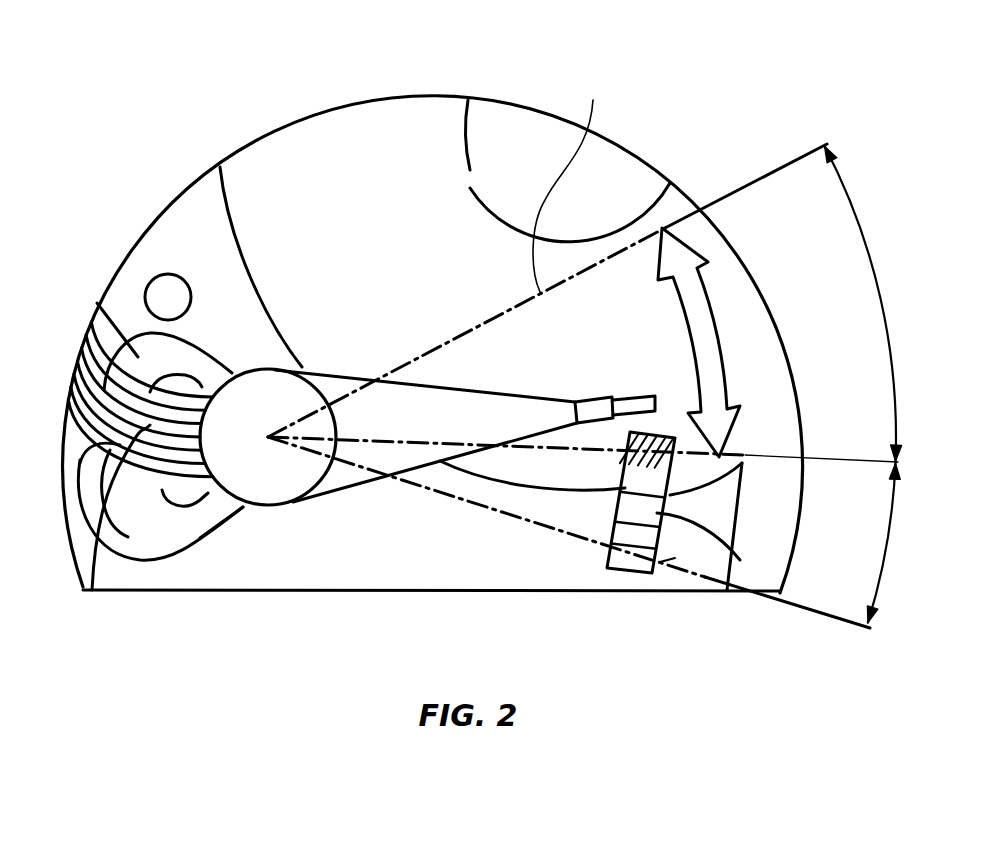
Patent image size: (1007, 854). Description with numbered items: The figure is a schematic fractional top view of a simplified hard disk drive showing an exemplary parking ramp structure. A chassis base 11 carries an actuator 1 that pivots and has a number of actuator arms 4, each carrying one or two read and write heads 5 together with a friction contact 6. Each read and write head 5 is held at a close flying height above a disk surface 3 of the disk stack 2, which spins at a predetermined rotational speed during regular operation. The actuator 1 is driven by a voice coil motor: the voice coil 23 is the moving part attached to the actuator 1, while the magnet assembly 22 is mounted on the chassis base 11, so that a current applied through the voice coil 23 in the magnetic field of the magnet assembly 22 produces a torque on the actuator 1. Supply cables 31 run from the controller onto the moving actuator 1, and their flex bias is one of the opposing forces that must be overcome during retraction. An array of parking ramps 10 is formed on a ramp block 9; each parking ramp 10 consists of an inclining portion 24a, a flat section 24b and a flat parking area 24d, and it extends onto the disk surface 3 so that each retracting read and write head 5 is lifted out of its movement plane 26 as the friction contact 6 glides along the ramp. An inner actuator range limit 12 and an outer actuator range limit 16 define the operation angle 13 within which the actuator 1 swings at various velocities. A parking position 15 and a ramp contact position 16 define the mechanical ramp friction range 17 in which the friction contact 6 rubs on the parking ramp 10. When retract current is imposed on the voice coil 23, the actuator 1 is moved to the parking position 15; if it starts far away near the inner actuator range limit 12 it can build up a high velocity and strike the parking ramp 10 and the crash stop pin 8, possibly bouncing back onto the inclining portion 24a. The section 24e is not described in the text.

The actuator 1 is at (248, 368).
The disk stack 2 is at (512, 148).
The disk surface 3 is at (312, 147).
The actuator arm 4 is at (390, 407).
The read and write head 5 is at (598, 408).
The friction contact 6 is at (652, 402).
The crash stop pin 8 is at (167, 297).
The ramp block 9 is at (703, 552).
The parking ramp 10 is at (607, 570).
The chassis base 11 is at (222, 572).
The inner actuator range limit 12 is at (572, 178).
The operation angle 13 is at (592, 303).
The parking position 15 is at (430, 490).
The ramp contact position 16 is at (530, 448).
The mechanical ramp friction range 17 is at (594, 532).
The magnet assembly 22 is at (90, 590).
The voice coil 23 is at (97, 303).
The inclining portion 24a is at (625, 470).
The flat section 24b is at (745, 575).
The flat parking area 24d is at (632, 563).
The block section 24e is at (678, 555).
The movement plane 26 is at (715, 205).
The supply cables 31 is at (72, 373).